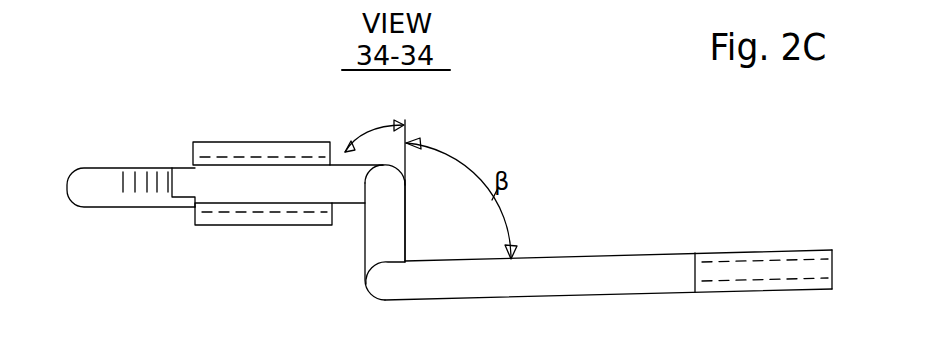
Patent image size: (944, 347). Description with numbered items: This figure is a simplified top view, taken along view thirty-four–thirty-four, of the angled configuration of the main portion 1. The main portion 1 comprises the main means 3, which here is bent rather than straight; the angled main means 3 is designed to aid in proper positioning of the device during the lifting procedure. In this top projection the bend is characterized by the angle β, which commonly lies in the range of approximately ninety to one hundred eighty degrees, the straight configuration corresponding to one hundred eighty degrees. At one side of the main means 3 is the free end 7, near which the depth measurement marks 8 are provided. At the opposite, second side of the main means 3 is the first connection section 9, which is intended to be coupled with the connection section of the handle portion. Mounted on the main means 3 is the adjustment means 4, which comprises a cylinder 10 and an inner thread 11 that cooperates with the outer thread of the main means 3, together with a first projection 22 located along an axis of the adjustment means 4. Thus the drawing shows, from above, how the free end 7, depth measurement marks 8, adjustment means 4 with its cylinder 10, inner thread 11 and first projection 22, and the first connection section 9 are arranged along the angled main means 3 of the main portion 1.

The main portion 1 is at (442, 199).
The main means 3 is at (647, 258).
The adjustment means 4 is at (300, 142).
The free end 7 is at (80, 190).
The depth measurement marks 8 is at (132, 167).
The first connection section 9 is at (742, 268).
The cylinder 10 is at (302, 225).
The inner thread 11 is at (371, 124).
The first projection 22 is at (183, 180).